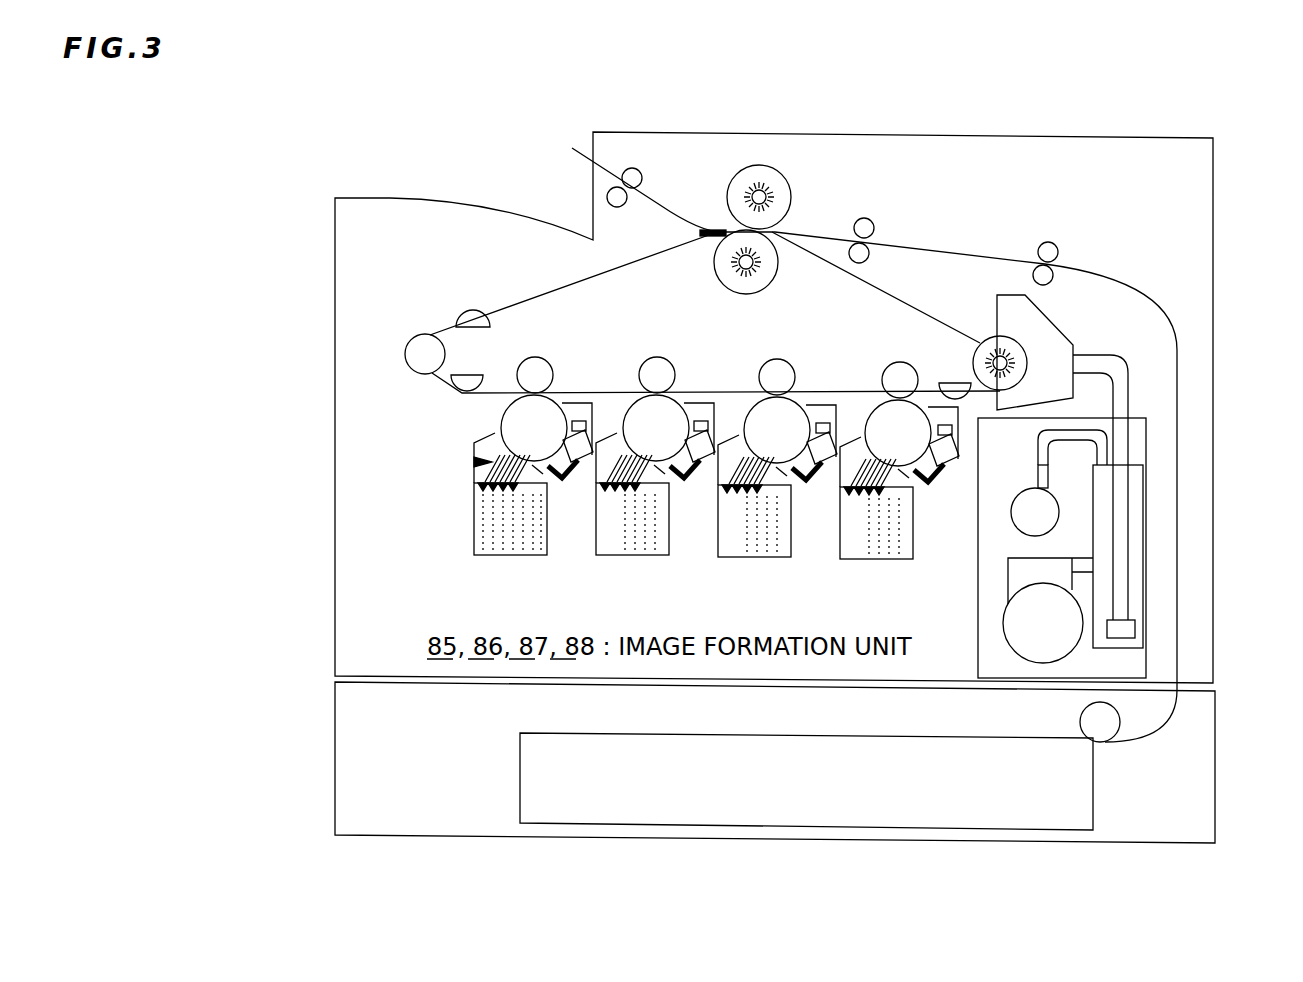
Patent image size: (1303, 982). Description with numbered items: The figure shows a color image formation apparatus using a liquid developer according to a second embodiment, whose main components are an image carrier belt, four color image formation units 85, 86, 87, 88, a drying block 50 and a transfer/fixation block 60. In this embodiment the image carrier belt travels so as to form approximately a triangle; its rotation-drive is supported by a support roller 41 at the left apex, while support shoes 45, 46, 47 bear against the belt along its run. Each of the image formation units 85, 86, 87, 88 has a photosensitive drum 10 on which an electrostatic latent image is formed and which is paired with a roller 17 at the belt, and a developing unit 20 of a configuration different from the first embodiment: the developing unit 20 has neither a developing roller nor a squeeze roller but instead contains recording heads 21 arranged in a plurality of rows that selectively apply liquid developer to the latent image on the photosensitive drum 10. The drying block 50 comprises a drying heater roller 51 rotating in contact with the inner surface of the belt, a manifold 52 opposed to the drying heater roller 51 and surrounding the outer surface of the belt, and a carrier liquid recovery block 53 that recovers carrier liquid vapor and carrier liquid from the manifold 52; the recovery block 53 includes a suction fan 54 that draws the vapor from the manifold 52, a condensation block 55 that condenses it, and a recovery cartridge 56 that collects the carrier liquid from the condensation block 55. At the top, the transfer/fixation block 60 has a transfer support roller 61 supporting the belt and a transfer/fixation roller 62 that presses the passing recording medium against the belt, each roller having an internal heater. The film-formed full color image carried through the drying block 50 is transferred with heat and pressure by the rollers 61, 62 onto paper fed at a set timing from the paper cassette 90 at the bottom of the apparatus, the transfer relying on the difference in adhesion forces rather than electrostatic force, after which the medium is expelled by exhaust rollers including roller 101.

The photosensitive drum 10 is at (548, 408).
The transfer roller 17 is at (545, 370).
The developing unit 20 is at (473, 471).
The recording head 21 is at (272, 423).
The support roller 41 is at (406, 357).
The support shoe 45 is at (472, 328).
The support shoe 46 is at (455, 395).
The support shoe 47 is at (955, 382).
The drying block 50 is at (1099, 447).
The drying heater roller 51 is at (990, 338).
The manifold 52 is at (1040, 335).
The carrier liquid recovery block 53 is at (995, 448).
The suction fan 54 is at (1030, 523).
The condensation block 55 is at (1138, 517).
The recovery cartridge 56 is at (1015, 625).
The transfer/fixation block 60 is at (767, 224).
The transfer support roller 61 is at (757, 280).
The transfer/fixation roller 62 is at (738, 190).
The color image formation unit 85 is at (323, 490).
The color image formation unit 86 is at (655, 502).
The color image formation unit 87 is at (777, 503).
The color image formation unit 88 is at (899, 504).
The paper cassette 90 is at (893, 788).
The exhaust roller 101 is at (633, 168).